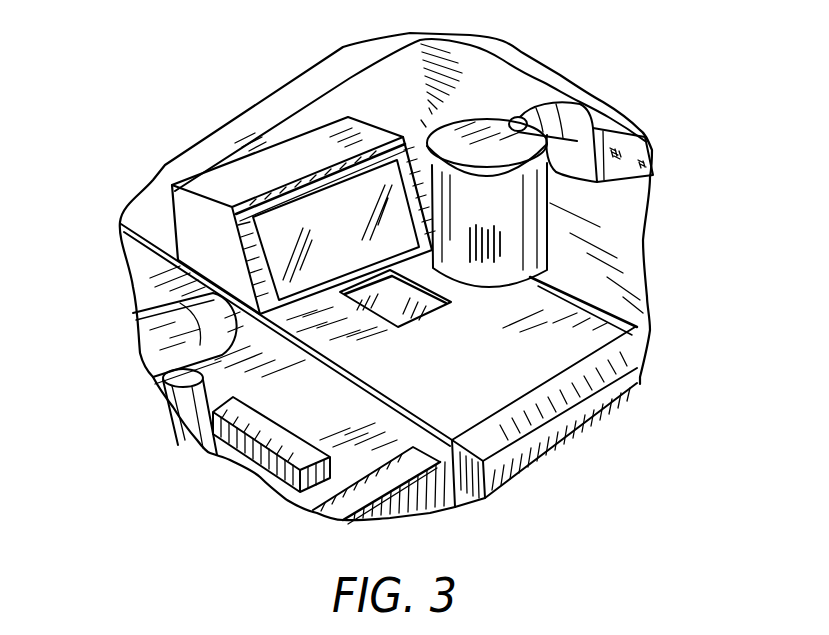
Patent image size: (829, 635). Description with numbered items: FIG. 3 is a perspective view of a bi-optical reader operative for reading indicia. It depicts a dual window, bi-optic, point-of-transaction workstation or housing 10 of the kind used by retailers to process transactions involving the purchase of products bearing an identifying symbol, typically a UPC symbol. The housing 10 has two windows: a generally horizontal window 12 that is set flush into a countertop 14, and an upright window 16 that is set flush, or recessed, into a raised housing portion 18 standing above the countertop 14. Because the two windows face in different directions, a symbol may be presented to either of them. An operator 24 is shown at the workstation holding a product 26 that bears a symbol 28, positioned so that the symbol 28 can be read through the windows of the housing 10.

The housing 10 is at (652, 367).
The horizontal window 12 is at (393, 300).
The countertop 14 is at (547, 353).
The upright window 16 is at (320, 215).
The raised housing portion 18 is at (183, 211).
The operator 24 is at (652, 178).
The product 26 is at (538, 176).
The symbol 28 is at (458, 247).